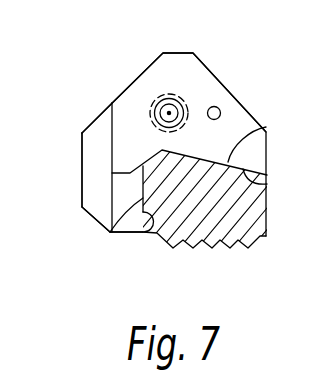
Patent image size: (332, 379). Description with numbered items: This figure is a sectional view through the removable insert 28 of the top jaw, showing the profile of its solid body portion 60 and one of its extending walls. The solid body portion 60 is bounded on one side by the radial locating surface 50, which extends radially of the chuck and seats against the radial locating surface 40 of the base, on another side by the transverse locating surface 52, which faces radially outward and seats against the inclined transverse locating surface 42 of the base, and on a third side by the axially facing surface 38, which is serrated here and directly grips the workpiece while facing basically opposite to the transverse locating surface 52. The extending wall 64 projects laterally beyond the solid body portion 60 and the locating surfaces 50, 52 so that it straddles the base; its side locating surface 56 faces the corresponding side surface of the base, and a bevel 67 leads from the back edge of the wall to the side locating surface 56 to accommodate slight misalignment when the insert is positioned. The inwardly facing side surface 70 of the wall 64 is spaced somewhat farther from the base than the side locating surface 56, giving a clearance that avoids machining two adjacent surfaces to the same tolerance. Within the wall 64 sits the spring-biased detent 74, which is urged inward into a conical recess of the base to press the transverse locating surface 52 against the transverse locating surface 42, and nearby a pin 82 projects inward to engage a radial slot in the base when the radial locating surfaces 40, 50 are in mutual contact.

The removable insert 28 is at (243, 88).
The axially facing surface 38 is at (240, 250).
The radial locating surface 40 is at (156, 228).
The transverse locating surface 42 is at (267, 176).
The radial locating surface 50 is at (110, 228).
The transverse locating surface 52 is at (266, 127).
The side locating surface 56 is at (112, 173).
The solid body portion 60 is at (248, 208).
The extending wall 64 is at (82, 142).
The bevel 67 is at (93, 190).
The inwardly facing side surface 70 is at (129, 110).
The spring-biased detent 74 is at (178, 95).
The pin 82 is at (221, 113).